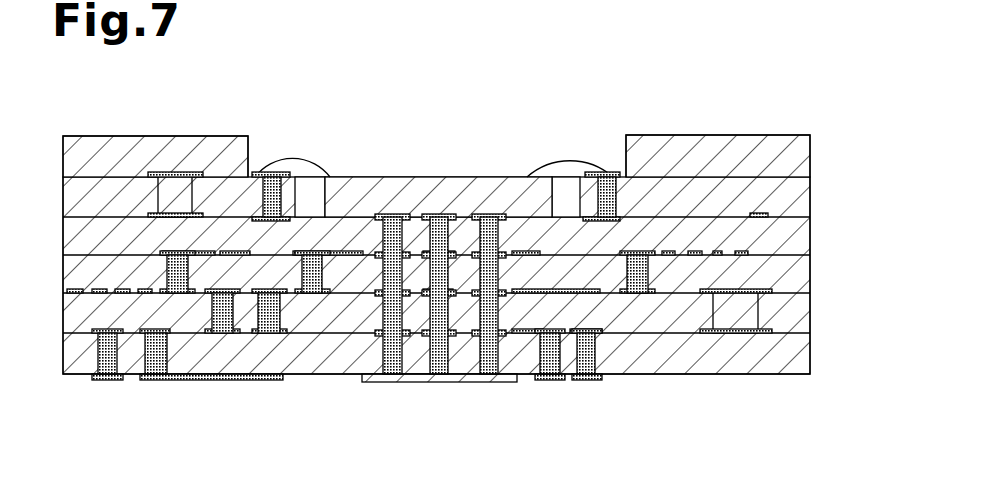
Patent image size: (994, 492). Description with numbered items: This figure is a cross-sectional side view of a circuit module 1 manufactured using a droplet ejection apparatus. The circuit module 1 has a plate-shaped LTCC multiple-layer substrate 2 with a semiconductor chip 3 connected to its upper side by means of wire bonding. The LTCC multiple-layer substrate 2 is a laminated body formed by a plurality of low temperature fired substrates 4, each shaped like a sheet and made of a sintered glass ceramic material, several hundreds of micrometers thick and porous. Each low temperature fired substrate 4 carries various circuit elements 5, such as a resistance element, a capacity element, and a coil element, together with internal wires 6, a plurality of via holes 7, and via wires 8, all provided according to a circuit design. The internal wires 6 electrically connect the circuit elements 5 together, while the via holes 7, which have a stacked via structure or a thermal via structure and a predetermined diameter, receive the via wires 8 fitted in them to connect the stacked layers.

The circuit module 1 is at (768, 90).
The LTCC multiple-layer substrate 2 is at (861, 158).
The semiconductor chip 3 is at (440, 176).
The low temperature fired substrate 4 is at (811, 155).
The circuit element 5 is at (157, 200).
The internal wire 6 is at (160, 172).
The via hole 7 is at (262, 198).
The via wire 8 is at (301, 276).